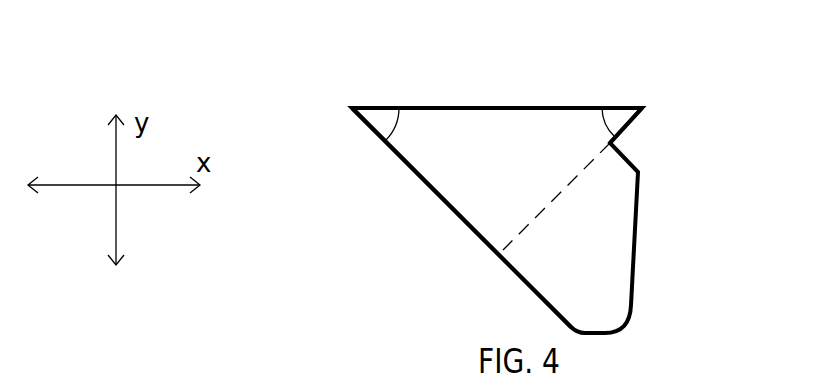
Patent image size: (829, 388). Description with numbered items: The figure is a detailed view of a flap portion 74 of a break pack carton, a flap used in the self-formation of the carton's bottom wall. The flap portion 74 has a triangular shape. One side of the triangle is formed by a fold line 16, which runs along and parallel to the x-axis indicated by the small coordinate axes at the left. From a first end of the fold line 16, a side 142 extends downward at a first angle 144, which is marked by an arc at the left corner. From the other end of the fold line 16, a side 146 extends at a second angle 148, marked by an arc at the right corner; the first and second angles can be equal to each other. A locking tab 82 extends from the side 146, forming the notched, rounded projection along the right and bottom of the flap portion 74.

The fold line 16 is at (515, 107).
The flap portion 74 is at (522, 163).
The locking tab 82 is at (672, 240).
The side 142 is at (473, 233).
The first angle 144 is at (395, 125).
The side 146 is at (639, 121).
The second angle 148 is at (611, 122).